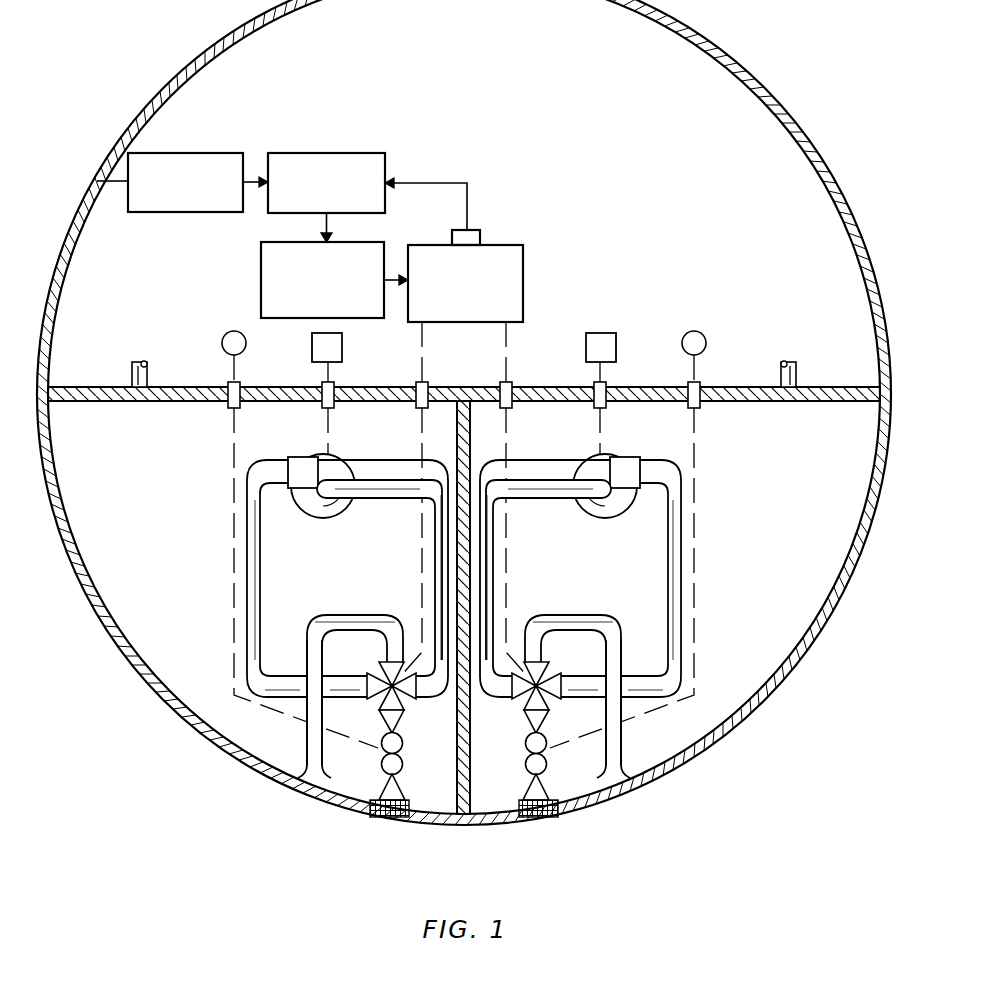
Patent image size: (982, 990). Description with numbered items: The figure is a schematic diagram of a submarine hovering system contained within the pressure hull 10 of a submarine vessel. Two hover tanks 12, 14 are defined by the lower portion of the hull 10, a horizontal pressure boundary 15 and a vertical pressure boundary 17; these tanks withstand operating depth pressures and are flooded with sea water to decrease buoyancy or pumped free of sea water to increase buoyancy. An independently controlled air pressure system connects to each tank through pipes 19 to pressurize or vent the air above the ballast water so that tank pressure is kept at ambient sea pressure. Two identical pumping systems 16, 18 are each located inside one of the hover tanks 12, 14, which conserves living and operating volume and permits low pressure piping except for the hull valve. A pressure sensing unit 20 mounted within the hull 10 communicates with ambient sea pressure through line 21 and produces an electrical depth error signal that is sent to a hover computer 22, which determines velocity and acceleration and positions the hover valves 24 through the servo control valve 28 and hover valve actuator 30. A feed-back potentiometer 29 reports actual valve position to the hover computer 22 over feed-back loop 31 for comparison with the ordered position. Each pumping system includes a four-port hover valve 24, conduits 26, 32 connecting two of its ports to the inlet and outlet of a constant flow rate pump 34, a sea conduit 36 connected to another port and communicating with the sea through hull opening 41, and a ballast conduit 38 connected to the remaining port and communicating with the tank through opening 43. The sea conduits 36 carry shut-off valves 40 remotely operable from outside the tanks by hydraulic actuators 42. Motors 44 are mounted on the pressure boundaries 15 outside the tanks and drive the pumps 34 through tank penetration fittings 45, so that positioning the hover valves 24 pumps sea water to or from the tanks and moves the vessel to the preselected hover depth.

The pressure hull 10 is at (818, 640).
The hover tank 12 is at (167, 628).
The hover tank 14 is at (750, 647).
The horizontal pressure boundary 15 is at (206, 386).
The pumping system 16 is at (325, 569).
The vertical pressure boundary 17 is at (467, 400).
The pumping system 18 is at (576, 569).
The pipe 19 is at (132, 375).
The pressure sensing unit 20 is at (205, 153).
The line 21 is at (118, 181).
The hover computer 22 is at (340, 153).
The hover valve 24 is at (399, 693).
The conduit 26 is at (437, 538).
The servo control valve 28 is at (261, 268).
The feed-back potentiometer 29 is at (480, 232).
The hover valve actuator 30 is at (523, 258).
The feed-back loop 31 is at (467, 192).
The conduit 32 is at (246, 538).
The constant flow rate pump 34 is at (313, 518).
The sea conduit 36 is at (401, 719).
The ballast conduit 38 is at (350, 622).
The shut-off valve 40 is at (403, 758).
The hull opening 41 is at (390, 814).
The hydraulic actuator 42 is at (222, 340).
The opening 43 is at (326, 779).
The motor 44 is at (342, 348).
The tank penetration fitting 45 is at (340, 390).